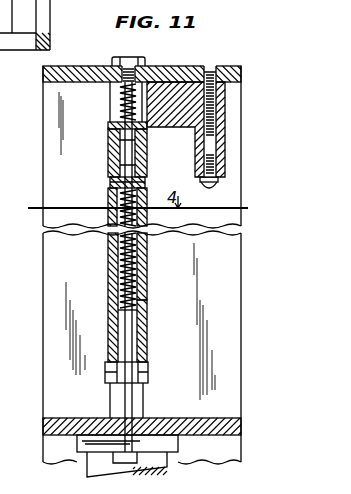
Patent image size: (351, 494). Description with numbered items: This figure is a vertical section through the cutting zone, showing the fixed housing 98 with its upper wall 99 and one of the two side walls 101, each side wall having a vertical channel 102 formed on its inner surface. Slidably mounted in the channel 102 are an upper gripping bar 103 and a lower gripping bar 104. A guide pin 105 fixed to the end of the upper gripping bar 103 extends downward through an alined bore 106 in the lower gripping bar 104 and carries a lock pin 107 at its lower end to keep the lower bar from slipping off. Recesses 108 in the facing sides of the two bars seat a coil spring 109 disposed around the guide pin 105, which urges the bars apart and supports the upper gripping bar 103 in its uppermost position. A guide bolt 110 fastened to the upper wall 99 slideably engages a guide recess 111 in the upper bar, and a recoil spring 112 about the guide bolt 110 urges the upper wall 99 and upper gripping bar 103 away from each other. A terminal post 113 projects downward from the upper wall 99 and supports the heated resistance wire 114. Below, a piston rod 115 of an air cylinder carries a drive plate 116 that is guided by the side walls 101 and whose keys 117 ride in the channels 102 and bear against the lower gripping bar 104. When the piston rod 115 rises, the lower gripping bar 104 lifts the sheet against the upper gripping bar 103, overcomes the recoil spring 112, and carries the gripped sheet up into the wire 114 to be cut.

The fixed housing 98 is at (35, 106).
The upper wall 99 is at (183, 67).
The side walls 101 is at (56, 138).
The vertical channel 102 is at (120, 220).
The upper gripping bar 103 is at (142, 163).
The lower gripping bar 104 is at (145, 307).
The guide pin 105 is at (145, 269).
The alined bore 106 is at (145, 339).
The lock pin 107 is at (145, 372).
The recesses 108 is at (122, 190).
The coil spring 109 is at (118, 298).
The guide bolt 110 is at (143, 64).
The guide recess 111 is at (110, 141).
The recoil spring 112 is at (120, 99).
The terminal posts 113 is at (225, 150).
The wire 114 is at (216, 180).
The piston rod 115 is at (100, 467).
The drive plate 116 is at (88, 418).
The keys 117 is at (143, 404).